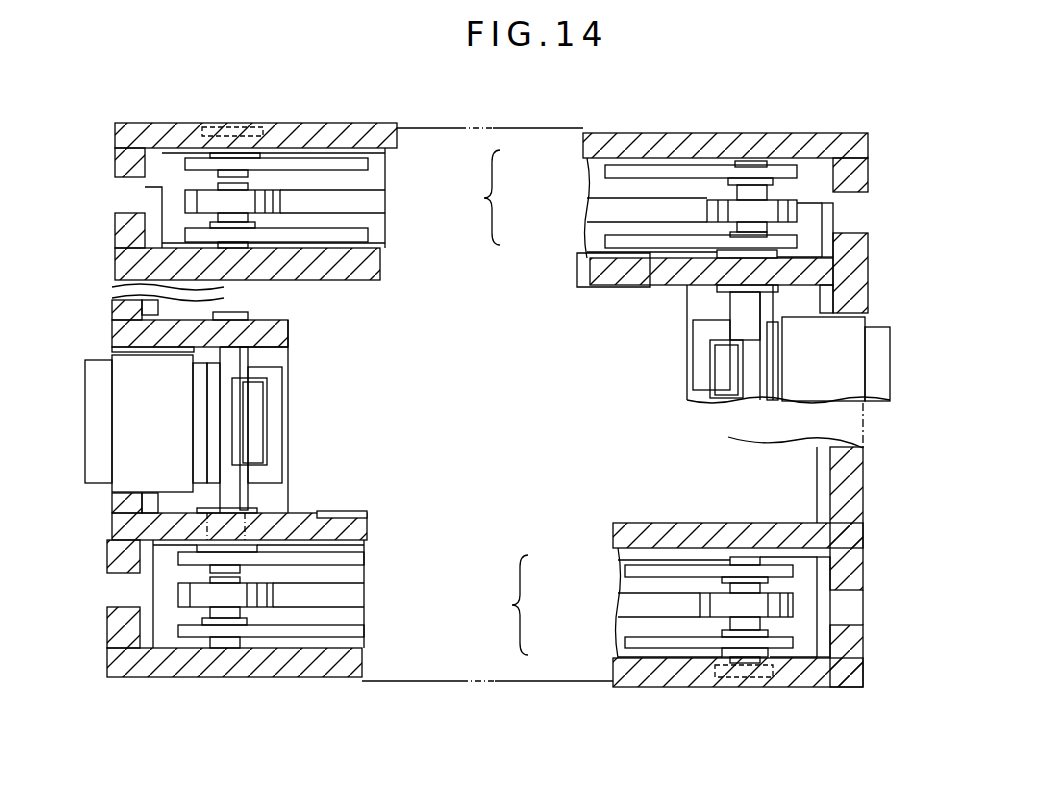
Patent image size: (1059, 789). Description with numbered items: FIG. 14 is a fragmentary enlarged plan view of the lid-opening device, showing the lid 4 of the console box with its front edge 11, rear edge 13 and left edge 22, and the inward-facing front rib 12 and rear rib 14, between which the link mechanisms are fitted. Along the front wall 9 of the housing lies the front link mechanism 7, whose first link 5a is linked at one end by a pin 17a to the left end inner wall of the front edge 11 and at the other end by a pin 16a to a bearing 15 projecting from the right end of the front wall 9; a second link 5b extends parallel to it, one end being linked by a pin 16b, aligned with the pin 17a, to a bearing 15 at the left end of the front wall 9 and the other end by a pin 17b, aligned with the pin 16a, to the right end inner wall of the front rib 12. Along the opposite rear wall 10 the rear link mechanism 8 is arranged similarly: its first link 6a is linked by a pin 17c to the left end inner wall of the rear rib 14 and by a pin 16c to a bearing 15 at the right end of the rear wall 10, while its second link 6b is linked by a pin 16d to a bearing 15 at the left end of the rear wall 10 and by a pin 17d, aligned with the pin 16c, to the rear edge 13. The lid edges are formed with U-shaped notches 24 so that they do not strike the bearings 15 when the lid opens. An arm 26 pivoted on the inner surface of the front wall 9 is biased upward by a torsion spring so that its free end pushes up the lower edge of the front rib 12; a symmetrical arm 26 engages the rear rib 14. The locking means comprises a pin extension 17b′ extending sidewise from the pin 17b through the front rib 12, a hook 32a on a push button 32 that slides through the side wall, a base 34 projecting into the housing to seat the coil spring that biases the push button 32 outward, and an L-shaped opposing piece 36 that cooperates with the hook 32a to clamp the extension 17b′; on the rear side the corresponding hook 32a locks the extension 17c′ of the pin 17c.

The lid 4 is at (853, 134).
The first link 5a is at (610, 172).
The second link 5b is at (615, 242).
The first link 6a is at (628, 570).
The second link 6b is at (628, 641).
The front link mechanism 7 is at (485, 197).
The rear link mechanism 8 is at (512, 605).
The front wall 9 is at (380, 160).
The rear wall 10 is at (347, 648).
The front edge 11 is at (327, 140).
The front rib 12 is at (362, 268).
The rear edge 13 is at (160, 665).
The rear rib 14 is at (632, 530).
The bearing 15 is at (267, 203).
The pin 16a is at (752, 195).
The pin 16b is at (243, 250).
The pin 16c is at (745, 590).
The pin 16d is at (227, 615).
The pin 17a is at (233, 170).
The pin 17b is at (822, 247).
The pin extension 17b′ is at (737, 328).
The pin 17c is at (235, 563).
The pin extension 17c′ is at (227, 392).
The pin 17d is at (745, 660).
The left edge 22 is at (118, 340).
The U-shaped notch 24 is at (142, 194).
The arm 26 is at (343, 513).
The push button 32 is at (90, 458).
The hook 32a is at (253, 430).
The base 34 is at (284, 358).
The L-shaped opposing piece 36 is at (208, 403).